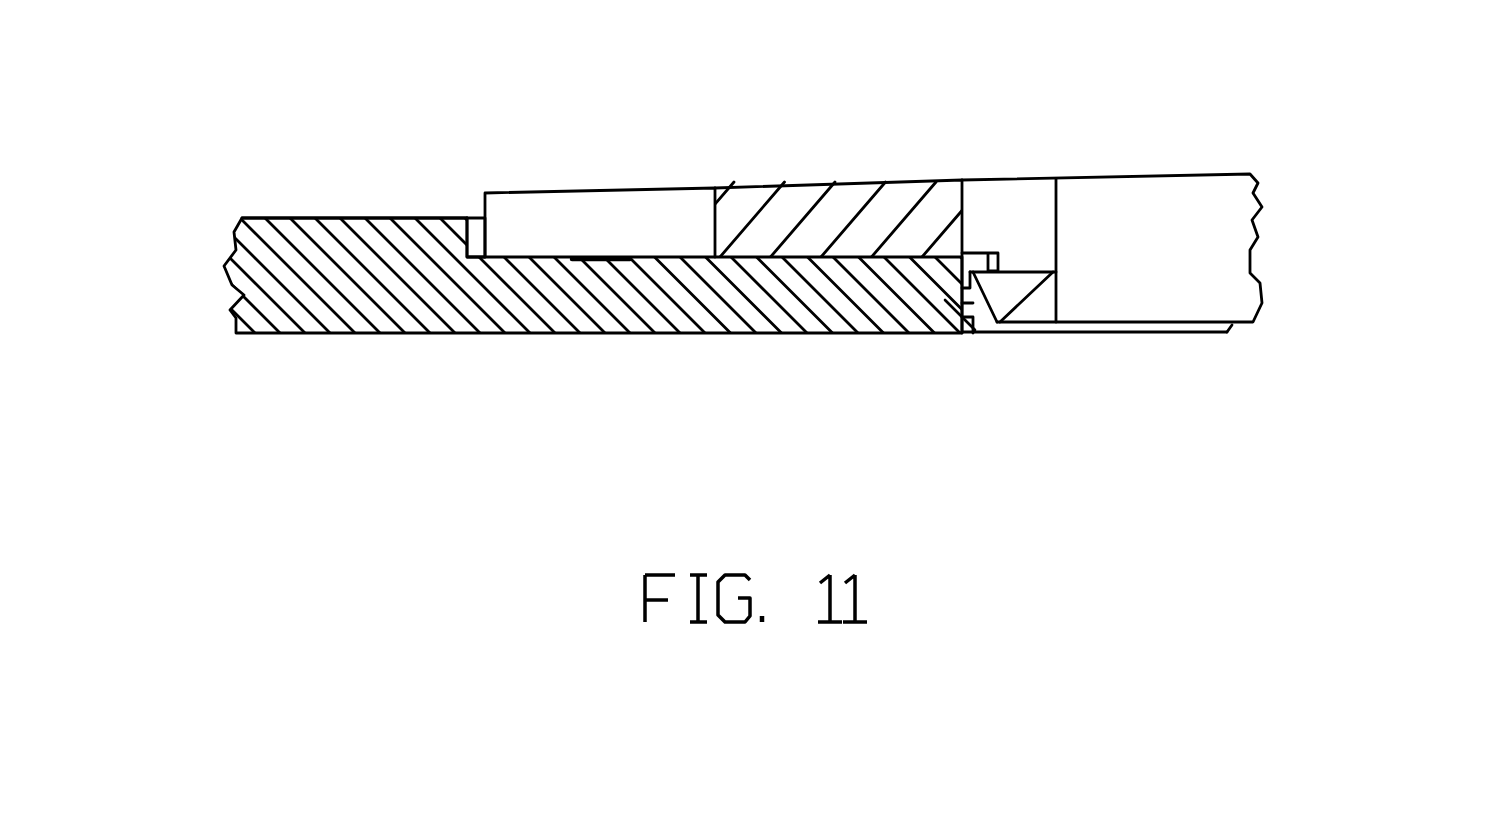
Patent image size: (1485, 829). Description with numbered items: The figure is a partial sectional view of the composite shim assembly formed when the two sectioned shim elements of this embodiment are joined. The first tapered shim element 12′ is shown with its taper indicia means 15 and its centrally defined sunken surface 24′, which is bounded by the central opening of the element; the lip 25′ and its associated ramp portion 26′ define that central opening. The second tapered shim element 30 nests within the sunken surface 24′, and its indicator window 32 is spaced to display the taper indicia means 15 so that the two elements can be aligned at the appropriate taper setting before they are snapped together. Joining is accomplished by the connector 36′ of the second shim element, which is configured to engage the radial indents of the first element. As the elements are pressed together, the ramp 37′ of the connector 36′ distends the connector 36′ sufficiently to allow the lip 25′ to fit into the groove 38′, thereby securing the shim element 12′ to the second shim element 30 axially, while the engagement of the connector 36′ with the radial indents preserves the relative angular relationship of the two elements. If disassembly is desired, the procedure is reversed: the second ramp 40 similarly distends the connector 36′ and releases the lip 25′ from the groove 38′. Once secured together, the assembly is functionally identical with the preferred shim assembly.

The first tapered shim element 12′ is at (241, 222).
The sunken surface 24′ is at (478, 238).
The indicator window 32 is at (520, 215).
The taper indicia means 15 is at (595, 257).
The groove 38′ is at (960, 332).
The second tapered shim element 30 is at (1263, 198).
The second ramp 40 is at (980, 268).
The lip 25′ is at (1000, 263).
The ramp 37′ is at (961, 305).
The connector 36′ is at (1012, 300).
The ramp portion 26′ is at (977, 300).